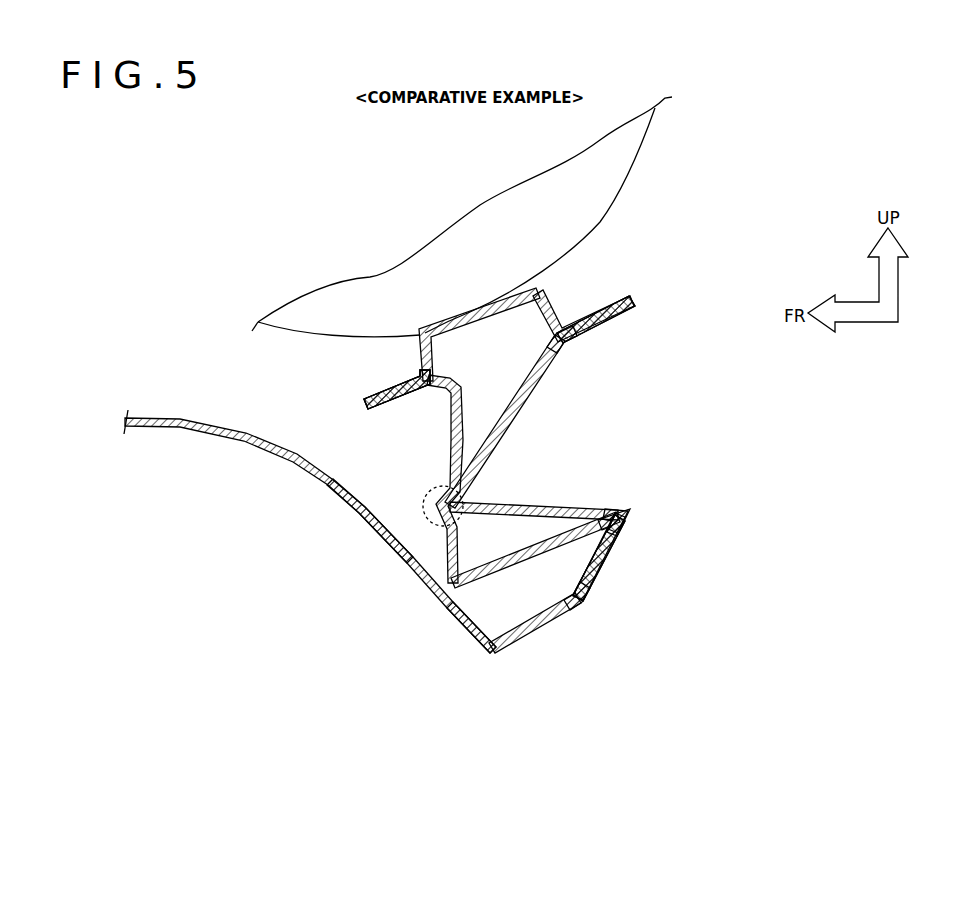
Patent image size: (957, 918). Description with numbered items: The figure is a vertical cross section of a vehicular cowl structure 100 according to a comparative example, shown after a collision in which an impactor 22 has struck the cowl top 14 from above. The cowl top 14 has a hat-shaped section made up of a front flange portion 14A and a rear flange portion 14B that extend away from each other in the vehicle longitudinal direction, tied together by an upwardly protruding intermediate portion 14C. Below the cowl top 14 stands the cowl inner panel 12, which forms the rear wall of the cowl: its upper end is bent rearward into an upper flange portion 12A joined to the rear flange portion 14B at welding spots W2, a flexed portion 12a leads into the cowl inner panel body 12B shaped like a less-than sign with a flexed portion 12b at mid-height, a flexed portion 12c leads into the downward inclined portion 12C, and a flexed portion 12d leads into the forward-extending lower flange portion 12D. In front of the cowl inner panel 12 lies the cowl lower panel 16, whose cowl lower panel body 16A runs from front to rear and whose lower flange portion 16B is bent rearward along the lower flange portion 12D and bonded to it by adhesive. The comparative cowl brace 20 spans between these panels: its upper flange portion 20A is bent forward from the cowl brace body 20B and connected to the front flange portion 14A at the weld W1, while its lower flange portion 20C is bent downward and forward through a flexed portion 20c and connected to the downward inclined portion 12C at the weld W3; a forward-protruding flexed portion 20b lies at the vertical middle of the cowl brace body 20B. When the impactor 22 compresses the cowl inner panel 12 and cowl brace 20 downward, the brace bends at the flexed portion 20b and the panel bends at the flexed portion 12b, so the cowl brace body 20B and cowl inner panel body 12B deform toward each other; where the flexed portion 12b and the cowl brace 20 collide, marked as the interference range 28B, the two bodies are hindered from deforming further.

The vehicular cowl structure 100 is at (701, 305).
The impactor 22 is at (633, 148).
The cowl top 14 is at (486, 321).
The front flange portion 14A is at (370, 393).
The rear flange portion 14B is at (618, 302).
The intermediate portion 14C is at (470, 333).
The first weld W1 is at (388, 383).
The welding spots W2 is at (591, 320).
The third weld W3 is at (612, 557).
The cowl brace 20 is at (494, 505).
The flange portion 20A is at (364, 404).
The cowl brace body 20B is at (458, 404).
The flexed portion 20b is at (446, 592).
The flexed portion 20c is at (612, 510).
The flange portion 20C is at (588, 568).
The interference range 28B is at (430, 481).
The cowl inner panel 12 is at (574, 488).
The upper flange portion 12A is at (622, 319).
The flexed portion 12a is at (578, 342).
The cowl inner panel body 12B is at (515, 432).
The flexed portion 12b is at (462, 500).
The flexed portion 12c is at (625, 513).
The downward inclined portion 12C is at (600, 591).
The flexed portion 12d is at (584, 608).
The lower flange portion 12D is at (540, 631).
The cowl lower panel 16 is at (320, 531).
The cowl lower panel body 16A is at (372, 523).
The flange portion 16B is at (516, 621).